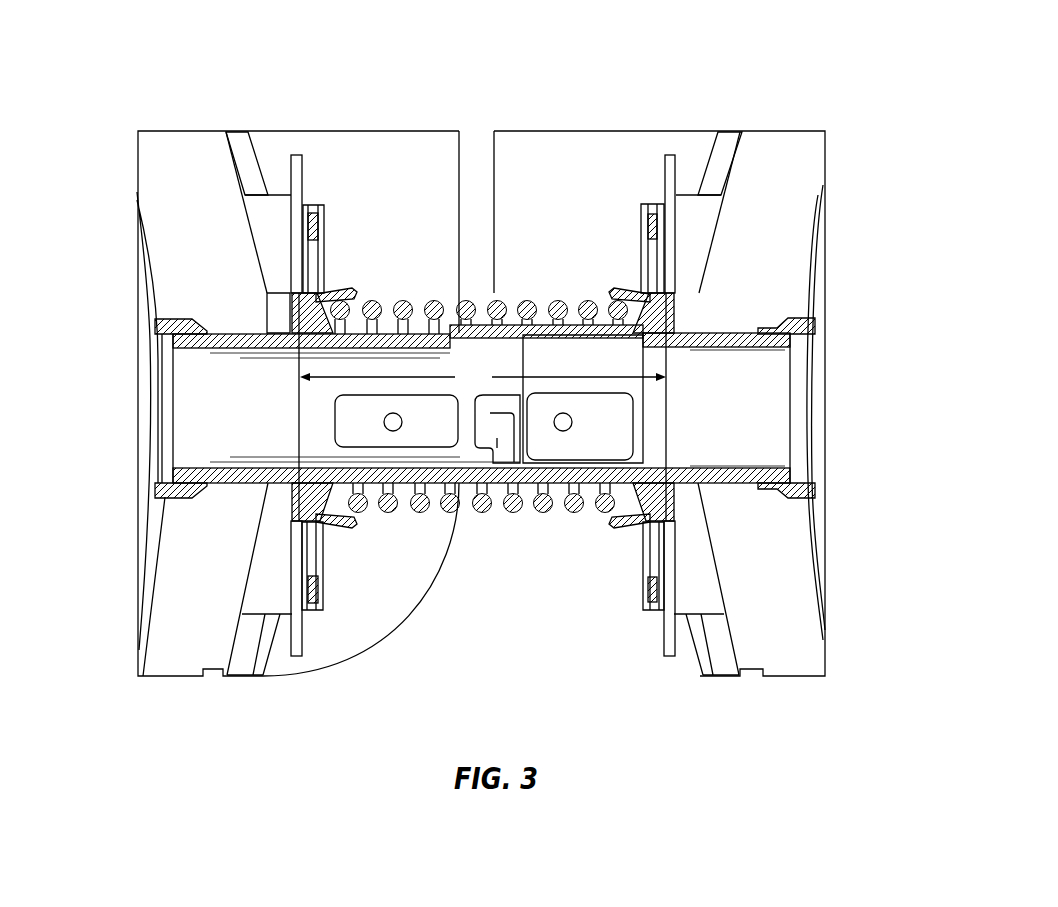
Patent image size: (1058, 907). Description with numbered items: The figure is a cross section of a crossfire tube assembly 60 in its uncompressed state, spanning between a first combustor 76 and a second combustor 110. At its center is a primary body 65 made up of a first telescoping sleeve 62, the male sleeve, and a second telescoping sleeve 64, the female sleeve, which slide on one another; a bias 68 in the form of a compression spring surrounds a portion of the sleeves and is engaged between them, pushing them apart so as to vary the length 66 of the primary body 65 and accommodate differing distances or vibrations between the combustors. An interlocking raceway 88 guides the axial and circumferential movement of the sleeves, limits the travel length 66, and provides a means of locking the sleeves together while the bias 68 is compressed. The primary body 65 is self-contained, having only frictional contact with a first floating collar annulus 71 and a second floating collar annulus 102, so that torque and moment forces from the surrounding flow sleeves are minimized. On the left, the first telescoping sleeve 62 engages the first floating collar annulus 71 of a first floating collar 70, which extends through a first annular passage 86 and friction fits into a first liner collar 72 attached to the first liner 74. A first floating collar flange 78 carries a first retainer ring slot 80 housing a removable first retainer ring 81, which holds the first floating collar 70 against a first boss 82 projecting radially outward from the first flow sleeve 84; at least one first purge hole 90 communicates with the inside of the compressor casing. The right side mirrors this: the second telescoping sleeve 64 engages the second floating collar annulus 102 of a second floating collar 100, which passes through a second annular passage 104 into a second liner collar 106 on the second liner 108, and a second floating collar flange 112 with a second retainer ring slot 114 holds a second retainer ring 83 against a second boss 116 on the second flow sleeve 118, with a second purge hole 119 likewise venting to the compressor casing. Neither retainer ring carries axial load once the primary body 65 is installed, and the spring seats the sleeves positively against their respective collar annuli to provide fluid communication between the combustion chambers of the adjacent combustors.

The crossfire tube assembly 60 is at (476, 96).
The first telescoping sleeve 62 is at (300, 486).
The second telescoping sleeve 64 is at (653, 478).
The primary body 65 is at (647, 297).
The length 66 is at (483, 377).
The bias 68 is at (466, 485).
The first floating collar 70 is at (190, 452).
The first floating collar annulus 71 is at (297, 494).
The first liner collar 72 is at (167, 383).
The first liner 74 is at (147, 275).
The first combustor 76 is at (153, 182).
The first floating collar flange 78 is at (297, 190).
The first retainer ring slot 80 is at (316, 258).
The first retainer ring 81 is at (308, 230).
The first boss 82 is at (268, 245).
The second retainer ring 83 is at (673, 182).
The first flow sleeve 84 is at (243, 150).
The first annular passage 86 is at (182, 325).
The interlocking raceway 88 is at (497, 463).
The first purge hole 90 is at (393, 431).
The second floating collar 100 is at (778, 424).
The second floating collar annulus 102 is at (670, 485).
The second annular passage 104 is at (777, 315).
The second liner collar 106 is at (797, 372).
The second liner 108 is at (813, 281).
The second combustor 110 is at (805, 162).
The second floating collar flange 112 is at (703, 150).
The second retainer ring slot 114 is at (650, 247).
The second boss 116 is at (703, 233).
The second flow sleeve 118 is at (723, 160).
The second purge hole 119 is at (563, 431).